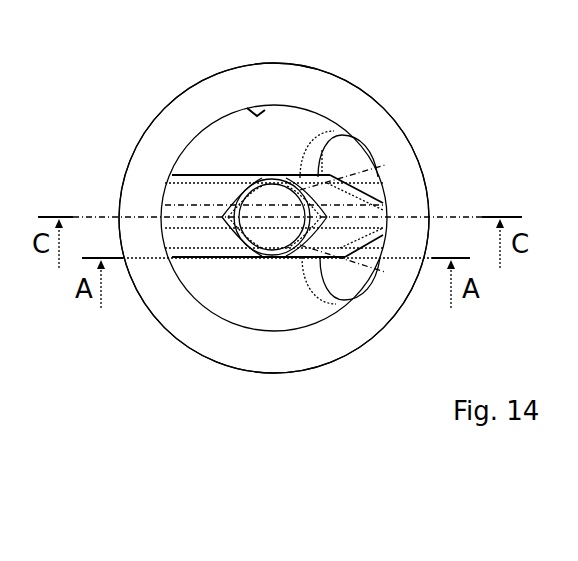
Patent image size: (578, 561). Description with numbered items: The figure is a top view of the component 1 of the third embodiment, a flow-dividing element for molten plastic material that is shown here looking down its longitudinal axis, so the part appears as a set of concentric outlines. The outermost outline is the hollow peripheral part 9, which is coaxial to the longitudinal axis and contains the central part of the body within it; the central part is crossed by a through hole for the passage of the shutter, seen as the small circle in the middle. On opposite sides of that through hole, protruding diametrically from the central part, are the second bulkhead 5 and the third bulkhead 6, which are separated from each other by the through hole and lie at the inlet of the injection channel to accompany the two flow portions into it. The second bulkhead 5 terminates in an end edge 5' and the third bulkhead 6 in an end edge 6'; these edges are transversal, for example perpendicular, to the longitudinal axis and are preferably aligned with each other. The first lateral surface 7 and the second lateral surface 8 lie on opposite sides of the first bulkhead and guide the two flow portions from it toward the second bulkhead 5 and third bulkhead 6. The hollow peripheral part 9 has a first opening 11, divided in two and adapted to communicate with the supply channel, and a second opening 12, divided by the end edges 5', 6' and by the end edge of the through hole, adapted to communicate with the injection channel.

The component 1 is at (122, 120).
The second bulkhead 5 is at (233, 266).
The end edge of the second bulkhead 5' is at (262, 145).
The third bulkhead 6 is at (389, 180).
The end edge of the third bulkhead 6' is at (388, 215).
The first lateral surface 7 is at (248, 290).
The second lateral surface 8 is at (288, 132).
The hollow peripheral part 9 is at (317, 347).
The first opening 11 is at (345, 158).
The second opening 12 is at (267, 108).